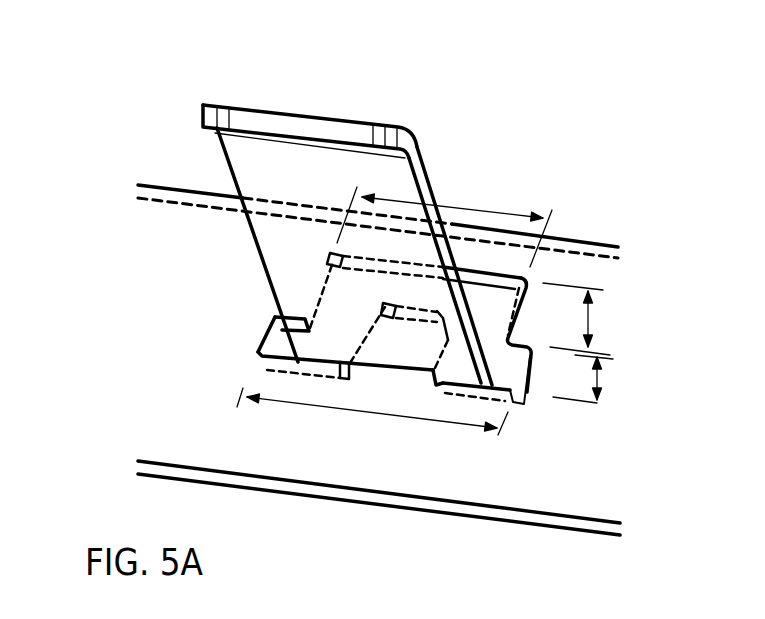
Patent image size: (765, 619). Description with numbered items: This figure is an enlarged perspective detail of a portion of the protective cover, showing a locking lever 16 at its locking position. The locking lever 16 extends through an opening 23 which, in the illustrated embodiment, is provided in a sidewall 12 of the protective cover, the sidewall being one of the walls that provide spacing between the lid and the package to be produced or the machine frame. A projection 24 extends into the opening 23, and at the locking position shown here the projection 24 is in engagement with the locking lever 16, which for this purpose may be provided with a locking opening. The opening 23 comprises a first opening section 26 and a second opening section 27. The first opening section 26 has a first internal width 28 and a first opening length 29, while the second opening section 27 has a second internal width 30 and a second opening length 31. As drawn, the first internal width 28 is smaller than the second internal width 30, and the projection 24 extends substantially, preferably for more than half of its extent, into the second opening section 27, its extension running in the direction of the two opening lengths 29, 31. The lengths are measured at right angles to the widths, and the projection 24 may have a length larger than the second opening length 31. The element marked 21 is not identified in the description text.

The sidewall 12 is at (472, 487).
The locking lever 16 is at (289, 98).
The inclined plate 21 is at (253, 165).
The opening 23 is at (500, 300).
The projection 24 is at (383, 332).
The first opening section 26 is at (498, 316).
The second opening section 27 is at (512, 374).
The first internal width 28 is at (483, 208).
The first opening length 29 is at (590, 318).
The second internal width 30 is at (360, 413).
The second opening length 31 is at (592, 381).